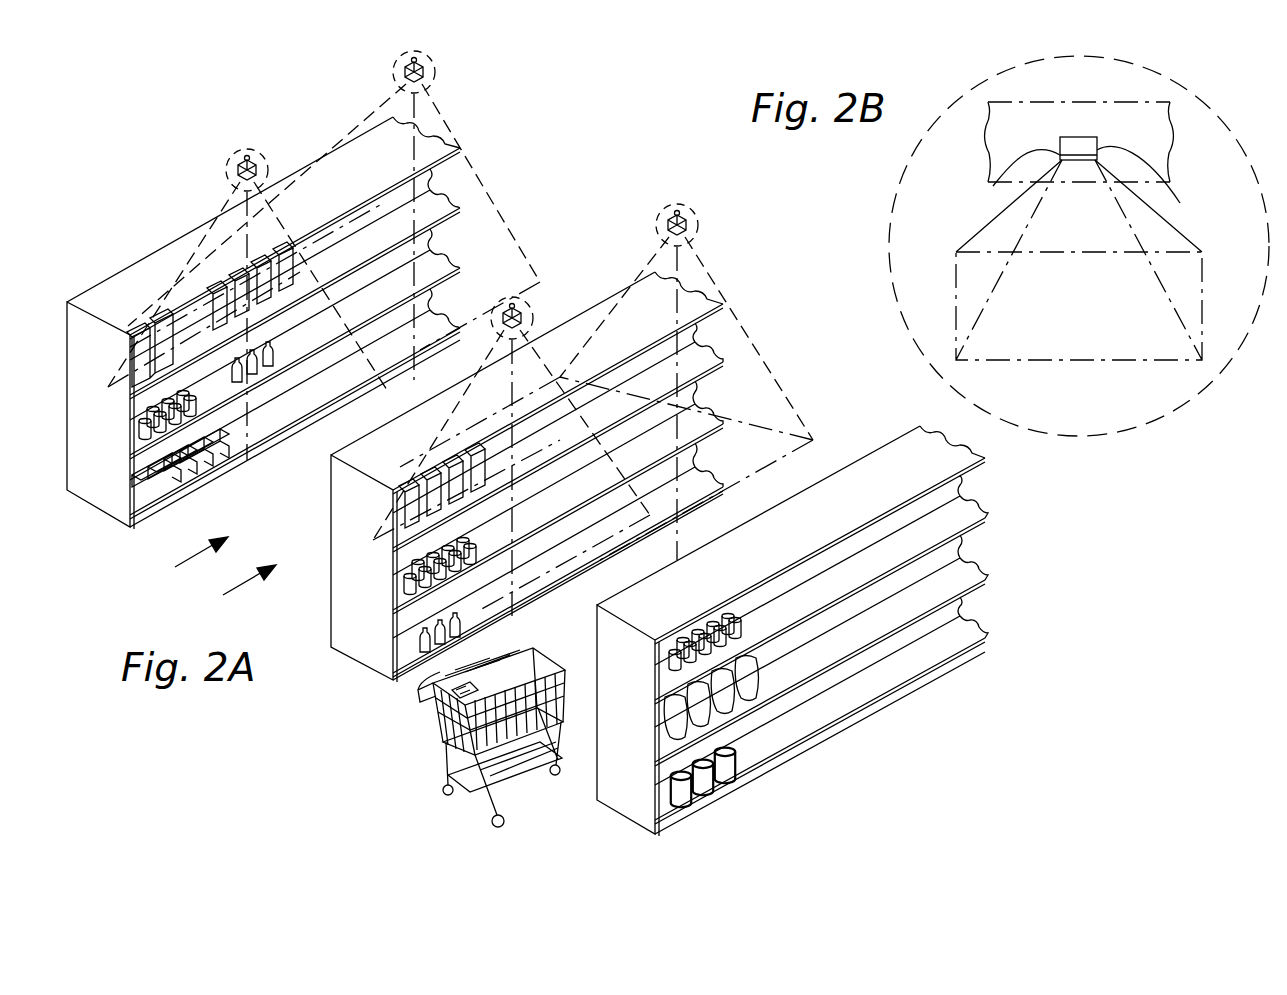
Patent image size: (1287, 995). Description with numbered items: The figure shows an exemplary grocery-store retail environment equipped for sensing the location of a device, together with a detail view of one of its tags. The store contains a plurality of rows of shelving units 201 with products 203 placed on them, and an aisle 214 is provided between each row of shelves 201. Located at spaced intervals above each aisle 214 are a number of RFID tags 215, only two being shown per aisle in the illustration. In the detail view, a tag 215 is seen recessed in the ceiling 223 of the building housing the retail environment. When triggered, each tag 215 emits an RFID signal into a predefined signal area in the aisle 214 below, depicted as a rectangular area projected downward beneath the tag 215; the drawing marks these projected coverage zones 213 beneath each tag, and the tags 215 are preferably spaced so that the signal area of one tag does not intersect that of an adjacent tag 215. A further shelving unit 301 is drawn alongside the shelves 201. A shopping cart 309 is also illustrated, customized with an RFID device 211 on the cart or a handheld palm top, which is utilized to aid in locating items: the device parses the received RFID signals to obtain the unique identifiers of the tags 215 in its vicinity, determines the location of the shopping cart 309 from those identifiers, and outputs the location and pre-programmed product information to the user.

In FIG. 2A, the shelving unit 201 is at (119, 429).
In FIG. 2A, the products 203 is at (138, 324).
In FIG. 2A, the RFID device on cart or handheld palm top 211 is at (440, 690).
In FIG. 2A, the RFID tag coverage zone 213 is at (322, 428).
In FIG. 2A, the aisle 214 is at (229, 586).
In FIG. 2A, the RFID tag 215 is at (255, 162).
In FIG. 2B, the RFID tag 215 is at (995, 187).
In FIG. 2B, the ceiling 223 is at (985, 120).
In FIG. 2A, the shelving unit 301 is at (646, 738).
In FIG. 2A, the shopping cart 309 is at (528, 790).